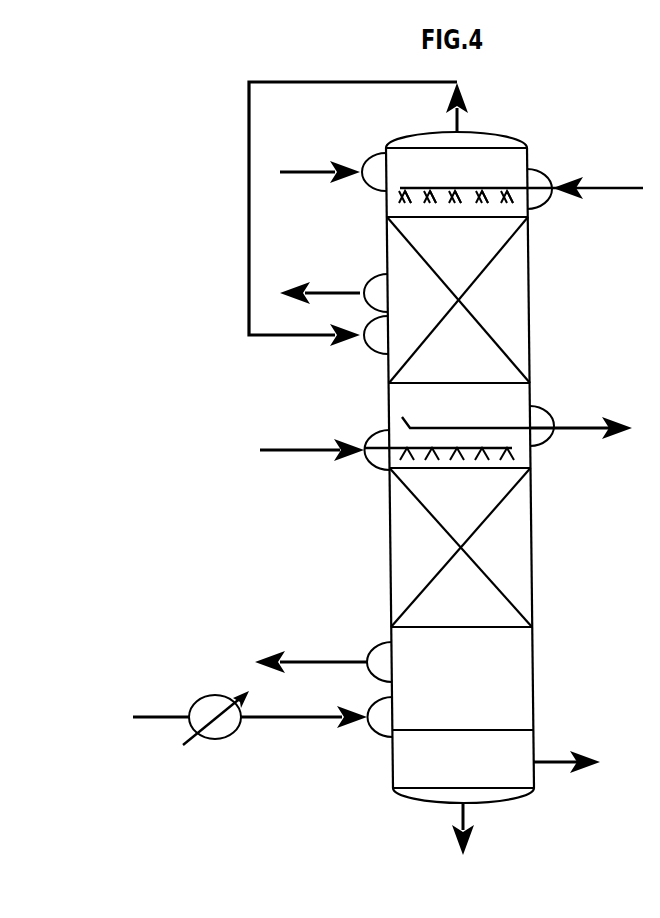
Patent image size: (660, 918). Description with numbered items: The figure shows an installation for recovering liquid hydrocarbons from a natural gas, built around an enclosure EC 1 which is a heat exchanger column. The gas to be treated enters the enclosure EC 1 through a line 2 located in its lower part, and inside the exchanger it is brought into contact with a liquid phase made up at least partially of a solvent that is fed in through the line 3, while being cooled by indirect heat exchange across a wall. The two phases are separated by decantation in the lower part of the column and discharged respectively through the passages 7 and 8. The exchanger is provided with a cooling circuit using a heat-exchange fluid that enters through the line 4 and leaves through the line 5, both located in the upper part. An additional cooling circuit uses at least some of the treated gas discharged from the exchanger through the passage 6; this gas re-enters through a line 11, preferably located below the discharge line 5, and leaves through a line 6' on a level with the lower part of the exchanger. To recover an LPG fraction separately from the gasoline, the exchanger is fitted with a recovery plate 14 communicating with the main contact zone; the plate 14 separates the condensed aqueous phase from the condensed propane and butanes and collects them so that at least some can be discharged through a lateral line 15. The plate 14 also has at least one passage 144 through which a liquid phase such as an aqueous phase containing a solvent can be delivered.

The enclosure EC 1 is at (508, 467).
The passage 6 is at (466, 107).
The line 11 is at (353, 222).
The line 4 is at (333, 167).
The line 3 is at (521, 194).
The line 5 is at (334, 285).
The plate 14 is at (495, 421).
The lateral line 15 is at (594, 426).
The passage 144 is at (387, 454).
The line 6' is at (323, 658).
The line 2 is at (263, 718).
The passage 8 is at (567, 769).
The passage 7 is at (475, 830).